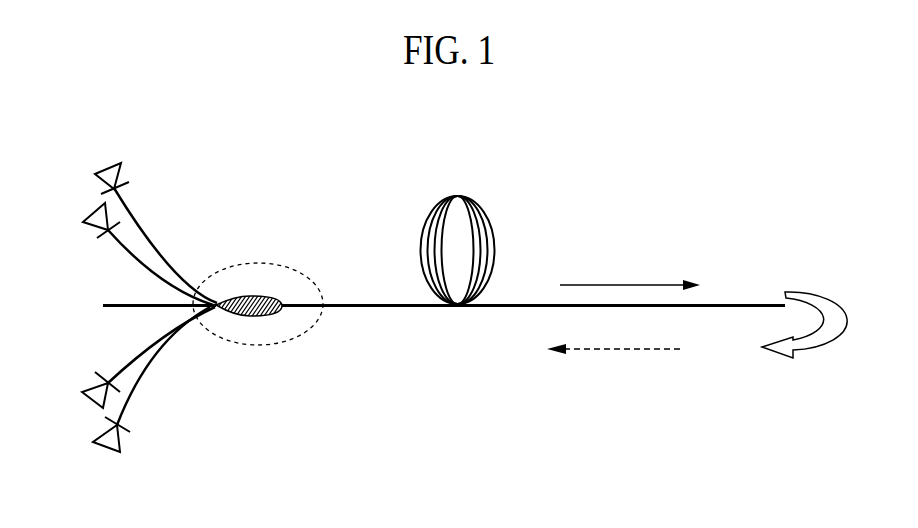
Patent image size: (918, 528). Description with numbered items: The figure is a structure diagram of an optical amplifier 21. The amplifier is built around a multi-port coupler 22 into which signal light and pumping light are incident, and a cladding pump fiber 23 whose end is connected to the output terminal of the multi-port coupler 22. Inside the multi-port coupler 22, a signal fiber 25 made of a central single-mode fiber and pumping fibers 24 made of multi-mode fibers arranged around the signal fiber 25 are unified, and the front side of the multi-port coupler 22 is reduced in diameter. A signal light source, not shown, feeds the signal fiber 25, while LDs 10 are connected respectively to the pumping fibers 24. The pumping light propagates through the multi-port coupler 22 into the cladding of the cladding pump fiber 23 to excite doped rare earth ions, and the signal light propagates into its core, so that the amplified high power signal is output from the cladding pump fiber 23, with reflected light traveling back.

The LD 10 is at (112, 164).
The optical amplifier 21 is at (718, 224).
The multi-port coupler 22 is at (251, 297).
The cladding pump fiber 23 is at (483, 210).
The pumping fibers 24 is at (140, 255).
The signal fiber 25 is at (132, 304).